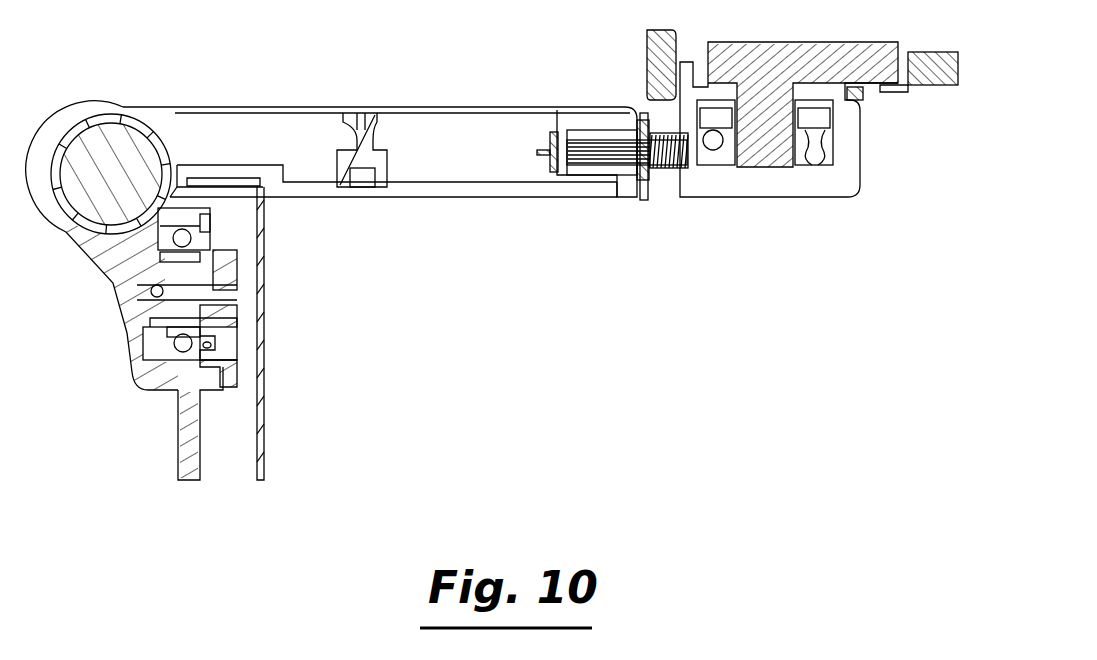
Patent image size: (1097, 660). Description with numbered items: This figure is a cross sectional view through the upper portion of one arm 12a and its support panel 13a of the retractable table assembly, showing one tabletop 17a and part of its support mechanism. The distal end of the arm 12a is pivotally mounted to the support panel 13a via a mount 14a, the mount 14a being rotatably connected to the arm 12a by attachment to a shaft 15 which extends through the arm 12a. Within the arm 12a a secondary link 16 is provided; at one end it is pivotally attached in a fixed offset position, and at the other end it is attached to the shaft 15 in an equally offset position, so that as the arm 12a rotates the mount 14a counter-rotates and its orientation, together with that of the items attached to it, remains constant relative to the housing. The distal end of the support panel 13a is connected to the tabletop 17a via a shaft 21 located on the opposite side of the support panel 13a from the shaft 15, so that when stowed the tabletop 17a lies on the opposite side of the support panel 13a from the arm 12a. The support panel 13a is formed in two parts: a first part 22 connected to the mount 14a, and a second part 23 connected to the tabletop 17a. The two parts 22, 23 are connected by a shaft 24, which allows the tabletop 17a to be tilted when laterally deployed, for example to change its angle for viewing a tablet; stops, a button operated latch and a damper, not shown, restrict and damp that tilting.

The arm 12a is at (263, 460).
The support panel 13a is at (382, 197).
The mount 14a is at (130, 333).
The shaft 15 is at (167, 294).
The secondary link 16 is at (183, 465).
The tabletop 17a is at (930, 85).
The shaft 21 is at (772, 178).
The first part 22 is at (318, 197).
The second part 23 is at (648, 200).
The shaft 24 is at (612, 150).